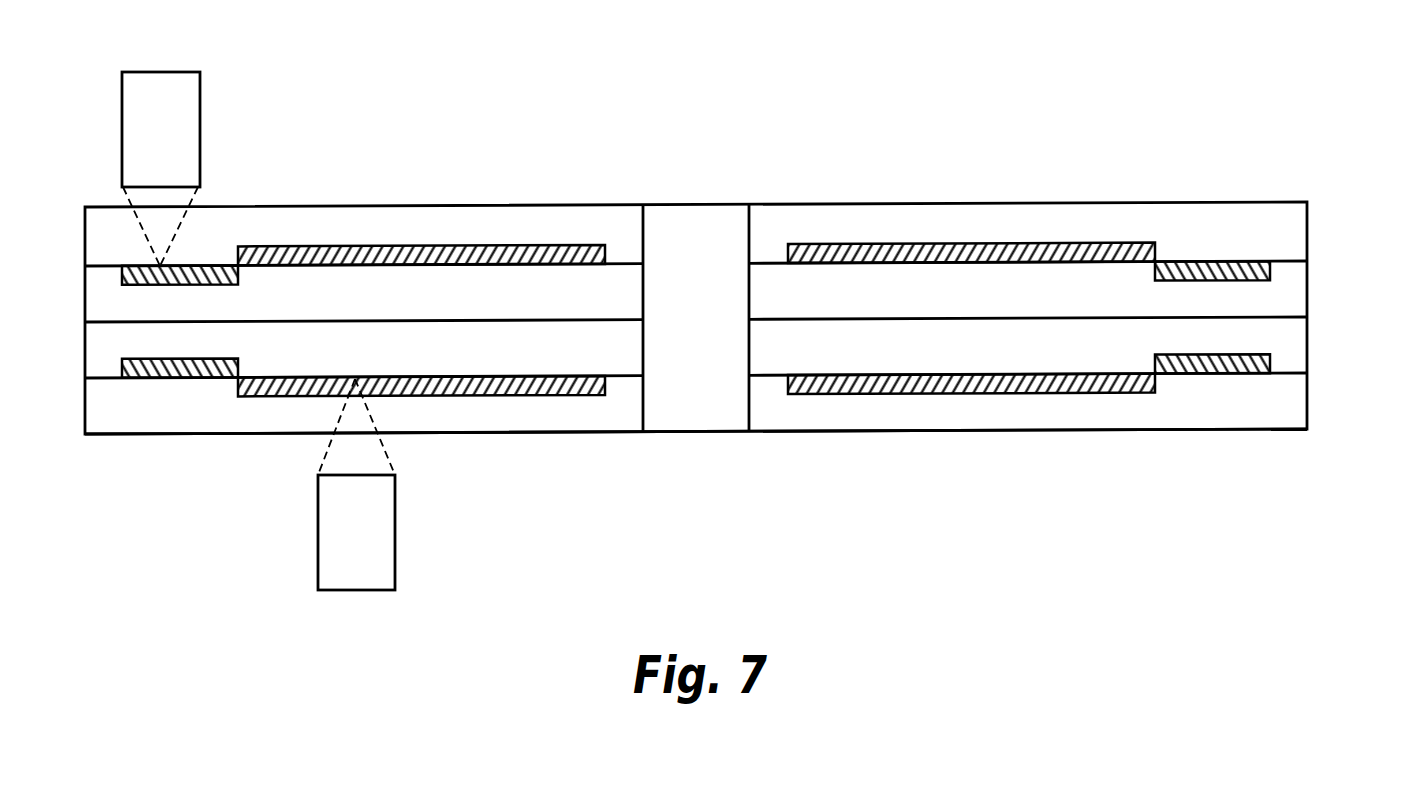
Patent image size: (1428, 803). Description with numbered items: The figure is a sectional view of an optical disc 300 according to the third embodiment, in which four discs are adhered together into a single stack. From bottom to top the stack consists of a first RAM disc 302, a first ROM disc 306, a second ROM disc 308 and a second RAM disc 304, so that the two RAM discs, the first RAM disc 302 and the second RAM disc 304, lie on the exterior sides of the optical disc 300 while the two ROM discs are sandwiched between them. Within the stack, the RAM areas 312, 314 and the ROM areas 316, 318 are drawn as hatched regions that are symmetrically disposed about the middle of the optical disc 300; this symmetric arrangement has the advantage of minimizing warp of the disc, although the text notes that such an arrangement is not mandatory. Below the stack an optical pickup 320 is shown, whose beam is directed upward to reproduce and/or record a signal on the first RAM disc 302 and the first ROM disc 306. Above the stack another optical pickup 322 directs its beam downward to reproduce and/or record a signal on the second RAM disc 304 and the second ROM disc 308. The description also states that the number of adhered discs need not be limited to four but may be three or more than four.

The optical disc 300 is at (1278, 76).
The first RAM disc 302 is at (1426, 432).
The second RAM disc 304 is at (1425, 243).
The first ROM disc 306 is at (1425, 365).
The second ROM disc 308 is at (1425, 307).
The RAM area 312 is at (556, 397).
The RAM area 314 is at (495, 245).
The ROM area 316 is at (190, 378).
The ROM area 318 is at (213, 267).
The optical pickup 320 is at (395, 548).
The optical pickup 322 is at (200, 92).